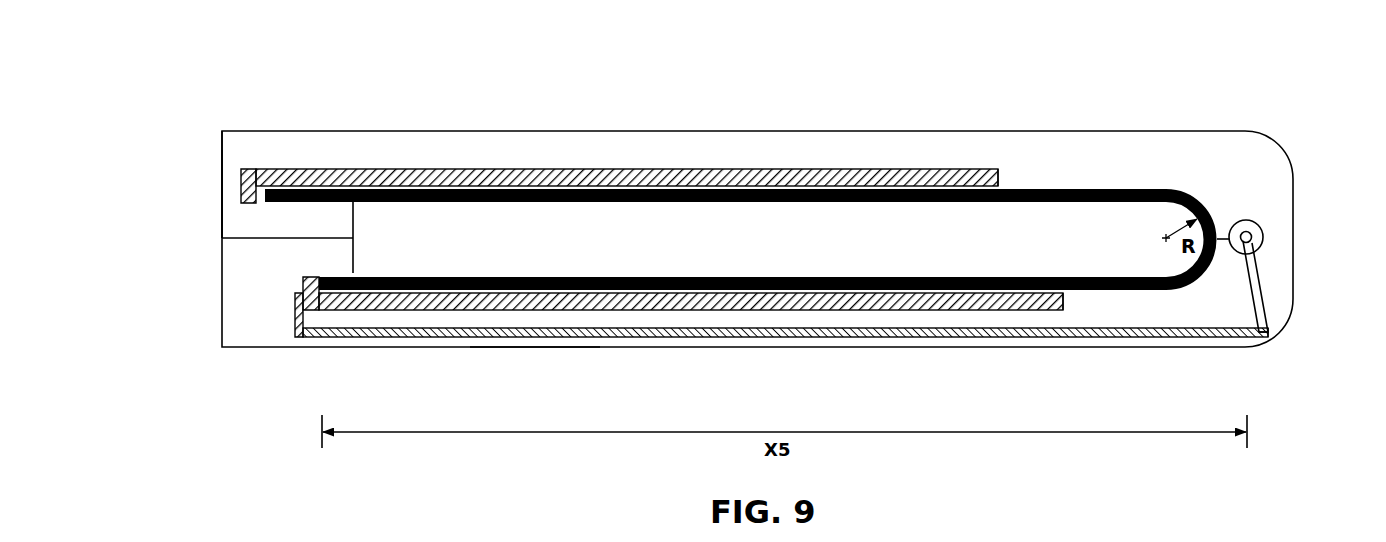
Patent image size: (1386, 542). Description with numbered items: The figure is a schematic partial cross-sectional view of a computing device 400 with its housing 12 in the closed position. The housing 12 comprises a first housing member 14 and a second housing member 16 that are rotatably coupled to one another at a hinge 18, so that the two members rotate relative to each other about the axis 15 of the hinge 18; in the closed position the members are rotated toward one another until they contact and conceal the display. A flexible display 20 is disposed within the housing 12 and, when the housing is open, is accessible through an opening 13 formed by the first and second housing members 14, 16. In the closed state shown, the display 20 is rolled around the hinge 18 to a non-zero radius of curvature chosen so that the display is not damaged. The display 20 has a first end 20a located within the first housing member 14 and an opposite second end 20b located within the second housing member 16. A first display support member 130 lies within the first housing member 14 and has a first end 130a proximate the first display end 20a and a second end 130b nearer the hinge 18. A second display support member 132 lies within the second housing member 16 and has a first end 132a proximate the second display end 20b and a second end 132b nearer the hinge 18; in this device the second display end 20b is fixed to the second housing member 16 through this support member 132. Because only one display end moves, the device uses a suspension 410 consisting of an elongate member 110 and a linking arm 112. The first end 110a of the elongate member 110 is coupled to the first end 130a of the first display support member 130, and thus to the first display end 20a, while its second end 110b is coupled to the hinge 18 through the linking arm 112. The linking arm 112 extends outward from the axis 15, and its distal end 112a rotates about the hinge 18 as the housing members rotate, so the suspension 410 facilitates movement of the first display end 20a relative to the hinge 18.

The computing device 400 is at (227, 66).
The second housing member 16 is at (222, 143).
The housing 12 is at (221, 197).
The first housing member 14 is at (222, 257).
The opening 13 is at (377, 260).
The second display support member 132 is at (733, 168).
The first end of second display support member 132a is at (246, 167).
The second end of second display support member 132b is at (1064, 174).
The flexible display 20 is at (738, 202).
The first end of display 20a is at (323, 292).
The second end of display 20b is at (266, 189).
The first display support member 130 is at (837, 311).
The first end of first display support member 130a is at (297, 281).
The second end of first display support member 130b is at (1069, 306).
The elongate member 110 is at (730, 338).
The first end of elongate member 110a is at (292, 339).
The second end of elongate member 110b is at (1261, 339).
The suspension 410 is at (527, 342).
The hinge 18 is at (1250, 225).
The axis 15 is at (1250, 242).
The linking arm 112 is at (1262, 293).
The distal end of linking arm 112a is at (1277, 335).